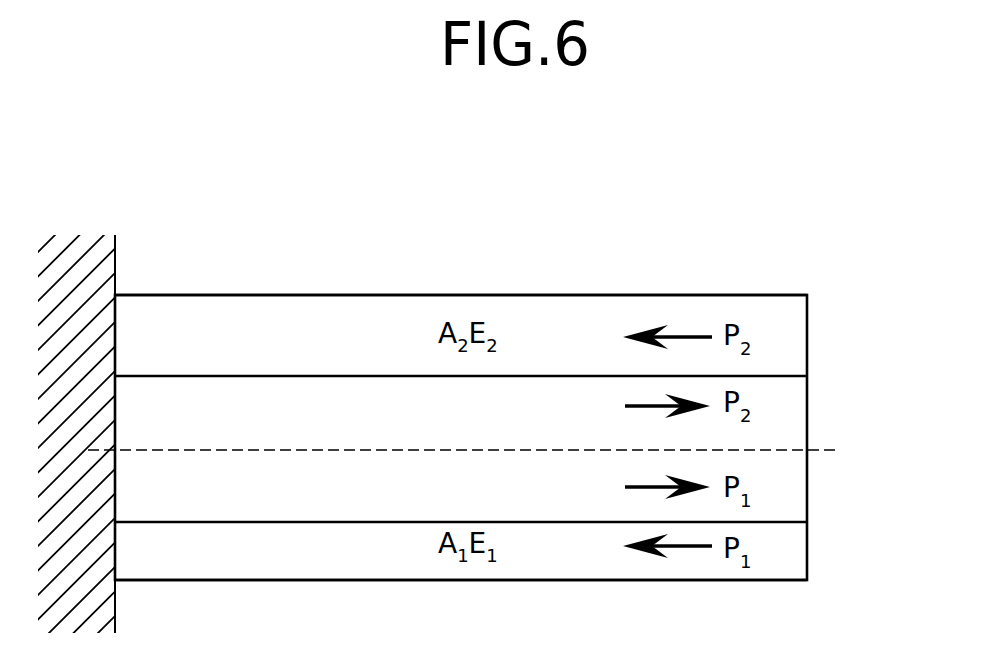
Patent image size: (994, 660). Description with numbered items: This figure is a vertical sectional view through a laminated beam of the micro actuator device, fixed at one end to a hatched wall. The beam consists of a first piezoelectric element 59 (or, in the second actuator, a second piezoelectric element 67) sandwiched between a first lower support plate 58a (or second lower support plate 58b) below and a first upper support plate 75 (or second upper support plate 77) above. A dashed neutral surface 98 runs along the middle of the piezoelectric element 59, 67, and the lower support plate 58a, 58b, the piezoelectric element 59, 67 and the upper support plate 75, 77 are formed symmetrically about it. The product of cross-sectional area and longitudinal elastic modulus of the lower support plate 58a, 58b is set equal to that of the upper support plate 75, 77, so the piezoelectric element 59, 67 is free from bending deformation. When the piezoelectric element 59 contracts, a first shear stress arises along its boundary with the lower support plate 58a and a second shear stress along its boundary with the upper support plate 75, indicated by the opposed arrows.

The first upper support plate 75 is at (461, 308).
The second upper support plate 77 is at (552, 308).
The first piezoelectric element 59 is at (519, 437).
The second piezoelectric element 67 is at (787, 400).
The neutral surface 98 is at (825, 452).
The first lower support plate 58a is at (461, 582).
The second lower support plate 58b is at (553, 570).